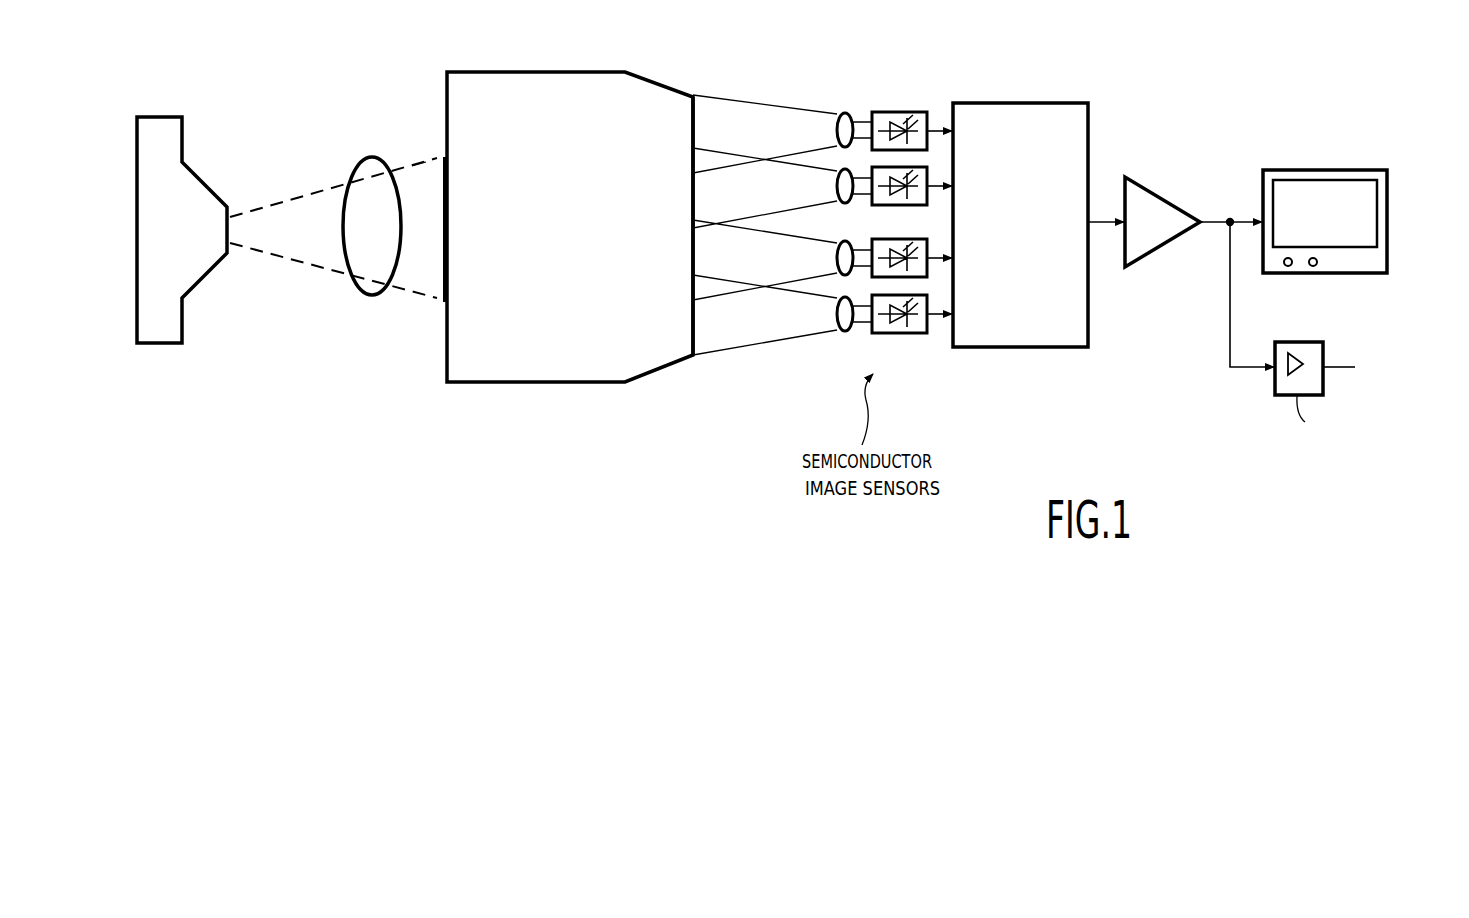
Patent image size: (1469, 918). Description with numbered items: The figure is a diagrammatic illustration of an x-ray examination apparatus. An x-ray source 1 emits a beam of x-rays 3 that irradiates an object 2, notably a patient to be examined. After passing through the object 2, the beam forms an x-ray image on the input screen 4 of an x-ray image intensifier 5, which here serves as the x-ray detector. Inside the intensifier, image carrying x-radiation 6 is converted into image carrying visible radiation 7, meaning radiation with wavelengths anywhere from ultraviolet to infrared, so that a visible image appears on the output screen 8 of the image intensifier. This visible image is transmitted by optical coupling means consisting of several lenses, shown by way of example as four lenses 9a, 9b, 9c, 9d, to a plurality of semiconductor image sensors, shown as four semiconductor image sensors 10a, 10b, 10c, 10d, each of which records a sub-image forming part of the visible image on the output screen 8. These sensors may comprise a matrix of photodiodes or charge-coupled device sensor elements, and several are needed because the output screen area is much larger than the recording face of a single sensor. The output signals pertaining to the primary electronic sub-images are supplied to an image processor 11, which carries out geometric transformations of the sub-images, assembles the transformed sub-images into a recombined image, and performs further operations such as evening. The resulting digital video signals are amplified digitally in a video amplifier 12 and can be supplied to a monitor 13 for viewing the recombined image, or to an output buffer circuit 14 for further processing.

The x-ray source 1 is at (172, 148).
The object 2 is at (366, 170).
The beam of x-rays 3 is at (292, 262).
The input screen 4 is at (442, 275).
The x-ray image intensifier 5 is at (550, 382).
The image carrying x-radiation 6 is at (420, 182).
The image carrying visible radiation 7 is at (753, 128).
The output screen 8 is at (695, 126).
The lens 9a is at (846, 112).
The lens 9b is at (836, 186).
The lens 9c is at (836, 258).
The lens 9d is at (845, 331).
The semiconductor image sensor 10a is at (898, 111).
The semiconductor image sensor 10b is at (888, 206).
The semiconductor image sensor 10c is at (901, 240).
The semiconductor image sensor 10d is at (890, 334).
The image processor 11 is at (1024, 113).
The video amplifier 12 is at (1162, 206).
The monitor 13 is at (1315, 169).
The output buffer circuit 14 is at (1273, 386).